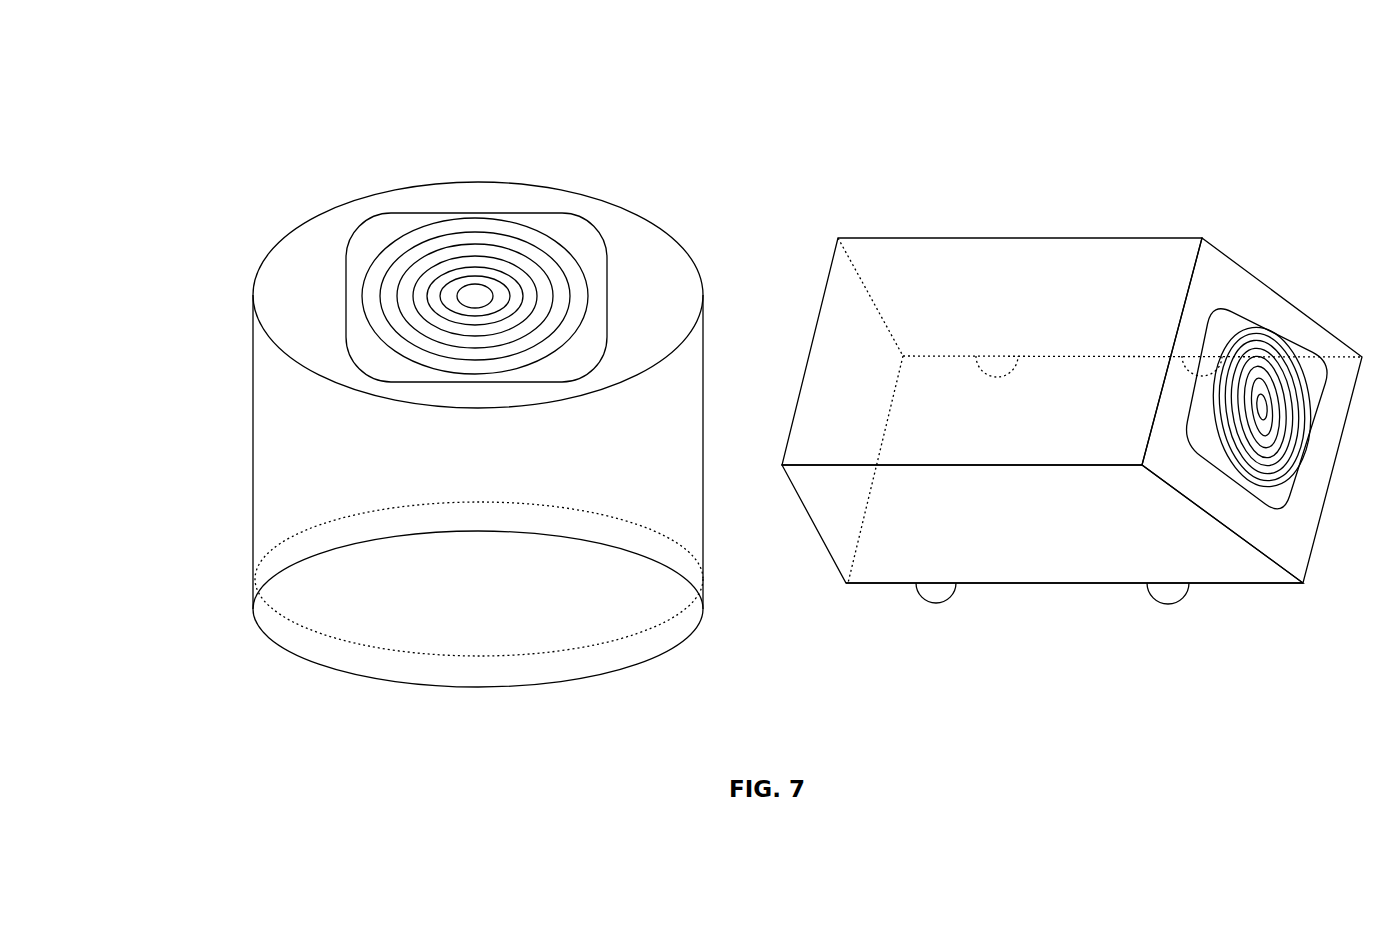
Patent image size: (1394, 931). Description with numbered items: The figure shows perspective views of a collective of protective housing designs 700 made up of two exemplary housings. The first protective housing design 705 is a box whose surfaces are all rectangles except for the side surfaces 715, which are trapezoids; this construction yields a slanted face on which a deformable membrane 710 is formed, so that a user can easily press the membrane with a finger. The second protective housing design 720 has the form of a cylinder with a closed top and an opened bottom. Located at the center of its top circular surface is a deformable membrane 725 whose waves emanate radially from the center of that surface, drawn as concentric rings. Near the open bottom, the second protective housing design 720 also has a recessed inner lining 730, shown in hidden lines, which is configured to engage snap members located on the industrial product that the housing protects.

The collective of protective housing designs 700 is at (1216, 97).
The first protective housing design 705 is at (1010, 238).
The deformable membrane 710 is at (1268, 327).
The side surfaces 715 is at (1060, 332).
The second protective housing design 720 is at (255, 500).
The deformable membrane 725 is at (553, 240).
The recessed inner lining 730 is at (498, 657).